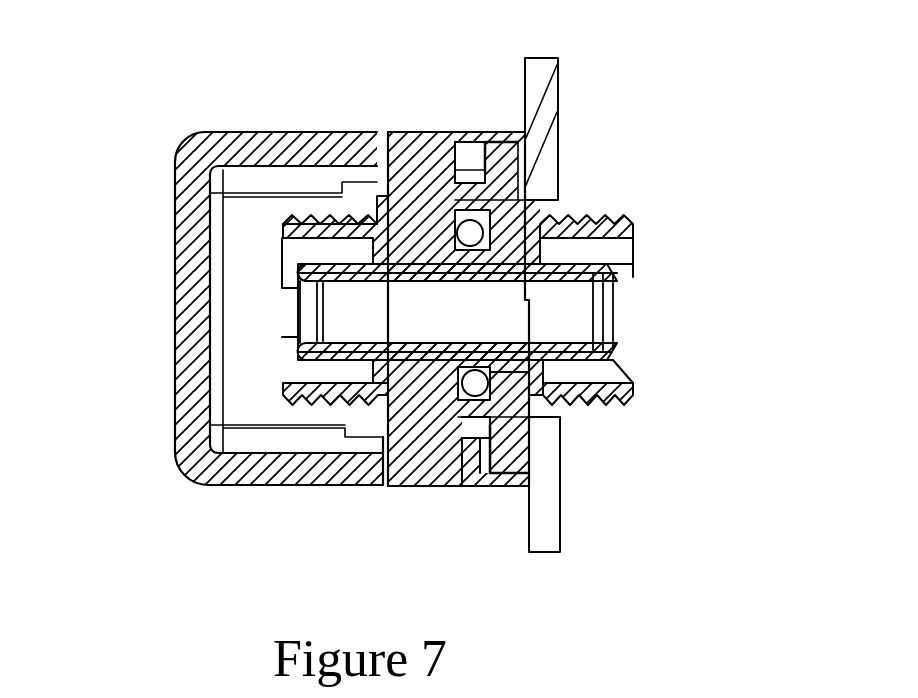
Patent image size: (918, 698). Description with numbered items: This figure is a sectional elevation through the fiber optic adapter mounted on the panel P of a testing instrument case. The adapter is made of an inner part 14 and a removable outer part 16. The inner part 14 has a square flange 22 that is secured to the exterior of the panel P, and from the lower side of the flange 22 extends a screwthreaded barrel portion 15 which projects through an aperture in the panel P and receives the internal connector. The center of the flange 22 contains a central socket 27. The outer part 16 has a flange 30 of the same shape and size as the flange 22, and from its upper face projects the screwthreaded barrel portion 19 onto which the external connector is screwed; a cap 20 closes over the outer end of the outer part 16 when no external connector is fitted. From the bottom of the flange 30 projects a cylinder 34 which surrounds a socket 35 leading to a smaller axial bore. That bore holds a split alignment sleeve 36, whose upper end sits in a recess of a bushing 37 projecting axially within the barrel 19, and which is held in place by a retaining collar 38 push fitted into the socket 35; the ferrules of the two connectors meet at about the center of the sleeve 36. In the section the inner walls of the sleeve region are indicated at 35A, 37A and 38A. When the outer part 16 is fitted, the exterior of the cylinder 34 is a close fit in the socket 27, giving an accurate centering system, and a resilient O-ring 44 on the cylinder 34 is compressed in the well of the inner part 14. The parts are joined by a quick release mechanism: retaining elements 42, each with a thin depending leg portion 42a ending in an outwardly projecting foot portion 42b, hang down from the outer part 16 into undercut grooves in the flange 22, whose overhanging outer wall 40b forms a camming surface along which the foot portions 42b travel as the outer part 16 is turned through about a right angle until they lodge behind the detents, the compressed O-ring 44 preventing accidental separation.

The inner part 14 is at (558, 58).
The screwthreaded barrel portion 15 is at (633, 222).
The outer part 16 is at (410, 130).
The screwthreaded barrel portion 19 is at (297, 220).
The cap 20 is at (175, 237).
The square flange 22 is at (472, 487).
The central socket 27 is at (497, 350).
The flange 30 is at (453, 132).
The cylinder 34 is at (527, 413).
The socket 35 is at (560, 257).
The upper tube wall 35A is at (617, 282).
The split alignment sleeve 36 is at (352, 283).
The bushing 37 is at (300, 265).
The sleeve end flange 37A is at (300, 273).
The retaining collar 38 is at (633, 382).
The lower tube wall 38A is at (612, 347).
The overhanging outer wall 40b is at (484, 487).
The retaining element 42 is at (494, 487).
The leg portion 42a is at (488, 158).
The foot portion 42b is at (488, 183).
The O-ring 44 is at (452, 487).
The panel P is at (552, 530).